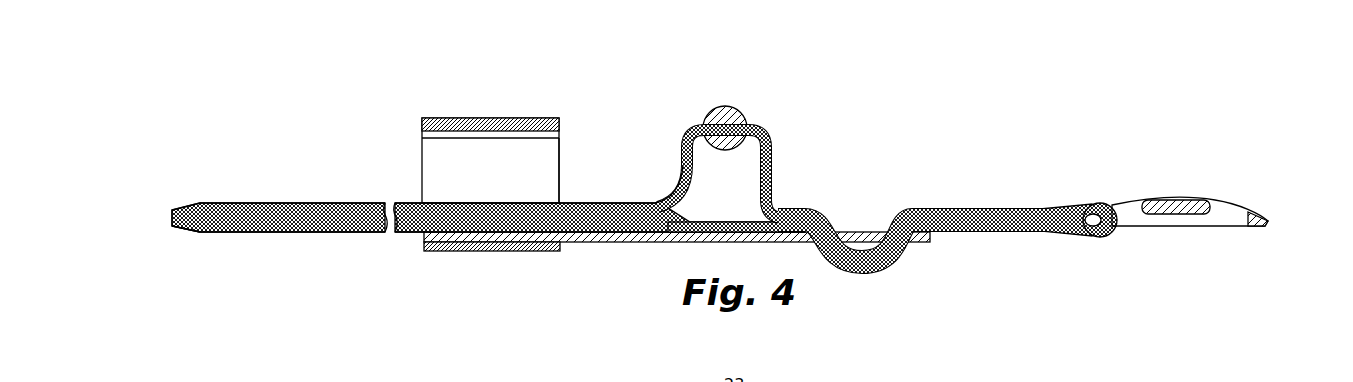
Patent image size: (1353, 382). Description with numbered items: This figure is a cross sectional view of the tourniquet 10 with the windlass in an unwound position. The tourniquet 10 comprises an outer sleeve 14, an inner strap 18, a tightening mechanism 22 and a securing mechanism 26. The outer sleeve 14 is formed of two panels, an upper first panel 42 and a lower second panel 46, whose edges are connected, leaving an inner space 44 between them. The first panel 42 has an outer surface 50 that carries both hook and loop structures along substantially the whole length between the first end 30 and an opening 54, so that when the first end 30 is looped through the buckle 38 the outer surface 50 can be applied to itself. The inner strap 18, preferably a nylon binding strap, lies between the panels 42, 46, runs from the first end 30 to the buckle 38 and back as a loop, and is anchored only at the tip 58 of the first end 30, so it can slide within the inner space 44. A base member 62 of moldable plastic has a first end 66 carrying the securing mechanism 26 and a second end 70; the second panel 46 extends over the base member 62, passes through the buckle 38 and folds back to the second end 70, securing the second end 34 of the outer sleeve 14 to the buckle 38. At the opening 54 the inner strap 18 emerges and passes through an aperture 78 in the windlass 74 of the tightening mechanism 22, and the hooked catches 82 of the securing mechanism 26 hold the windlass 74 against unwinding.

The tourniquet 10 is at (872, 92).
The outer sleeve 14 is at (300, 201).
The inner strap 18 is at (697, 136).
The tightening mechanism 22 is at (740, 132).
The securing mechanism 26 is at (571, 147).
The first end 30 is at (218, 186).
The second end 34 is at (911, 181).
The buckle 38 is at (1125, 205).
The first panel 42 is at (255, 203).
The inner space 44 is at (394, 210).
The second panel 46 is at (244, 235).
The outer surface 50 is at (320, 203).
The opening 54 is at (654, 200).
The tip 58 is at (178, 232).
The base member 62 is at (628, 245).
The first end of base member 66 is at (530, 256).
The second end of base member 70 is at (868, 190).
The windlass 74 is at (748, 112).
The aperture 78 is at (702, 124).
The hooked catches 82 is at (560, 171).